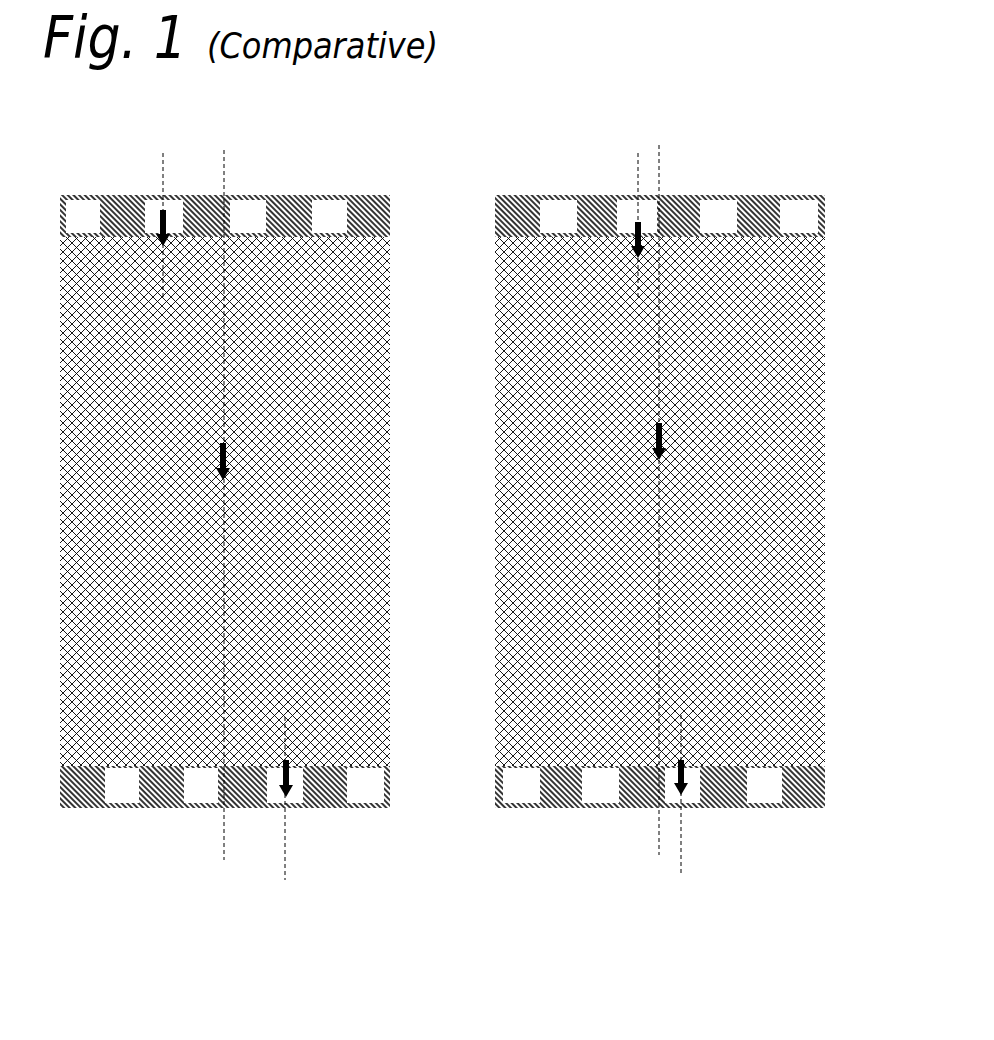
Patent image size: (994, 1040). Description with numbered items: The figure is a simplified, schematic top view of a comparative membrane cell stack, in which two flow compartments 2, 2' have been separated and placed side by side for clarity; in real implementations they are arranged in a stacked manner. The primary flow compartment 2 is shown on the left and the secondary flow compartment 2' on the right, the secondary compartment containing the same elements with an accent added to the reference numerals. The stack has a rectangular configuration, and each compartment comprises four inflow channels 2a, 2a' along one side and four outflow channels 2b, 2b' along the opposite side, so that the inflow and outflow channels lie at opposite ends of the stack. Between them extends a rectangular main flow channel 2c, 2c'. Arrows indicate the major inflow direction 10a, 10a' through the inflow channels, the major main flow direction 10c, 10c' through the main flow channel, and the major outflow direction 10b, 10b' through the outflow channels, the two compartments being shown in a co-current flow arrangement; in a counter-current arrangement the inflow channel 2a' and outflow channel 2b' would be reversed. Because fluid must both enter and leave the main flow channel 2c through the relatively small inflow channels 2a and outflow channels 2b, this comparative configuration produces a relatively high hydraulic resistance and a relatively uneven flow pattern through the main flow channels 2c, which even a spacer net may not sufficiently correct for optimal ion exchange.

The flow compartment 2 is at (266, 523).
The inflow channel 2a is at (248, 197).
The outflow channel 2b is at (236, 831).
The main flow channel 2c is at (251, 501).
The major inflow direction 10a is at (107, 226).
The major outflow direction 10b is at (363, 787).
The major main flow direction 10c is at (333, 505).
The flow compartment 2' is at (701, 521).
The inflow channel 2a' is at (675, 192).
The outflow channel 2b' is at (660, 831).
The main flow channel 2c' is at (689, 501).
The major inflow direction 10a' is at (571, 226).
The major outflow direction 10b' is at (785, 781).
The major main flow direction 10c' is at (770, 500).